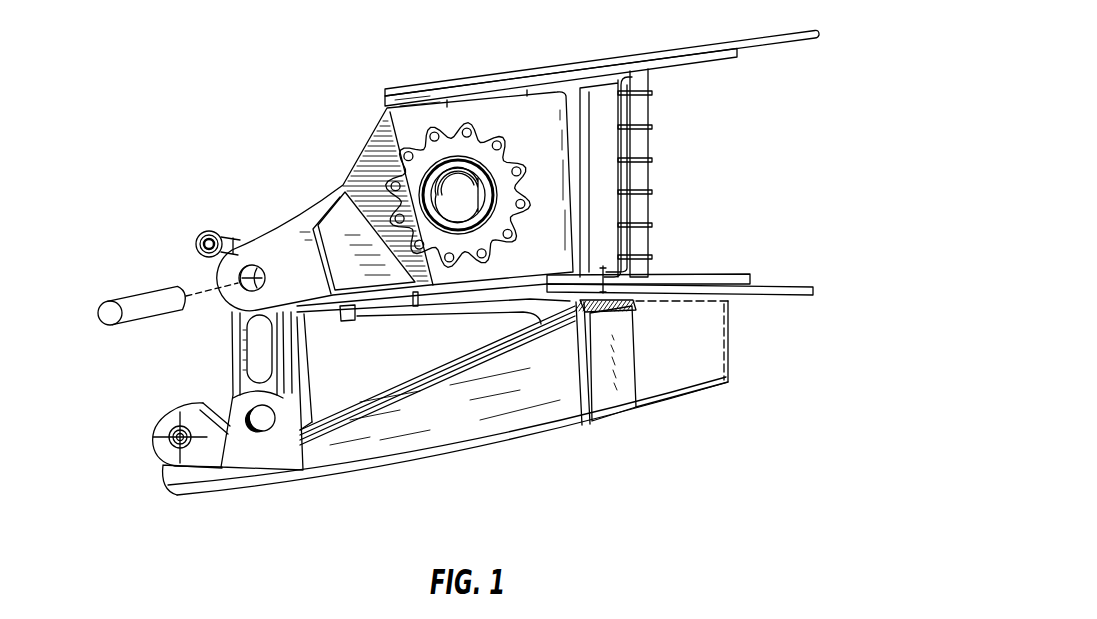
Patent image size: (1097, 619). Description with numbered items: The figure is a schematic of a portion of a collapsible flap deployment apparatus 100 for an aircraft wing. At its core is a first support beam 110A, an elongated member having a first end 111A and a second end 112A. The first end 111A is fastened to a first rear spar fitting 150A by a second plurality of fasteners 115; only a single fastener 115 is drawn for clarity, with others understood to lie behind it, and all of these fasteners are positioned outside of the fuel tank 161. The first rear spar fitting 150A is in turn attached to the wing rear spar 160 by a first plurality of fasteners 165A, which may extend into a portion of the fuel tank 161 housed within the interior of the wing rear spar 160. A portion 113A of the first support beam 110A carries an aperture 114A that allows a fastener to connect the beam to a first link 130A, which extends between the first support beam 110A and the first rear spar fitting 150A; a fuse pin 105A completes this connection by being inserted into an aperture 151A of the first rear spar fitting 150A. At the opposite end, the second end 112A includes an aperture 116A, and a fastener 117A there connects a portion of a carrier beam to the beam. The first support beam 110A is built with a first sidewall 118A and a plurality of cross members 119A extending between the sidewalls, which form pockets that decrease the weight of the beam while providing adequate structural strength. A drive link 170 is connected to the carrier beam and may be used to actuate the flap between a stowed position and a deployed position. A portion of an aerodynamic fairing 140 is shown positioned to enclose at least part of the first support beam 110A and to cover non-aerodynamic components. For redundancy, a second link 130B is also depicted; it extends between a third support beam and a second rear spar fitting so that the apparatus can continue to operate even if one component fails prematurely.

The collapsible flap deployment apparatus 100 is at (141, 42).
The fuse pin 105A is at (145, 296).
The first support beam 110A is at (473, 432).
The first end 111A is at (610, 398).
The second end 112A is at (152, 453).
The portion 113A is at (278, 463).
The aperture 114A is at (247, 408).
The second plurality of fasteners 115 is at (603, 270).
The aperture 116A is at (172, 415).
The fastener 117A is at (155, 431).
The first sidewall 118A is at (551, 385).
The cross members 119A is at (453, 368).
The first link 130A is at (237, 336).
The second link 130B is at (288, 324).
The aerodynamic fairing 140 is at (705, 378).
The first rear spar fitting 150A is at (297, 232).
The aperture 151A is at (238, 277).
The wing rear spar 160 is at (668, 58).
The fuel tank 161 is at (708, 195).
The first plurality of fasteners 165A is at (636, 116).
The drive link 170 is at (222, 228).